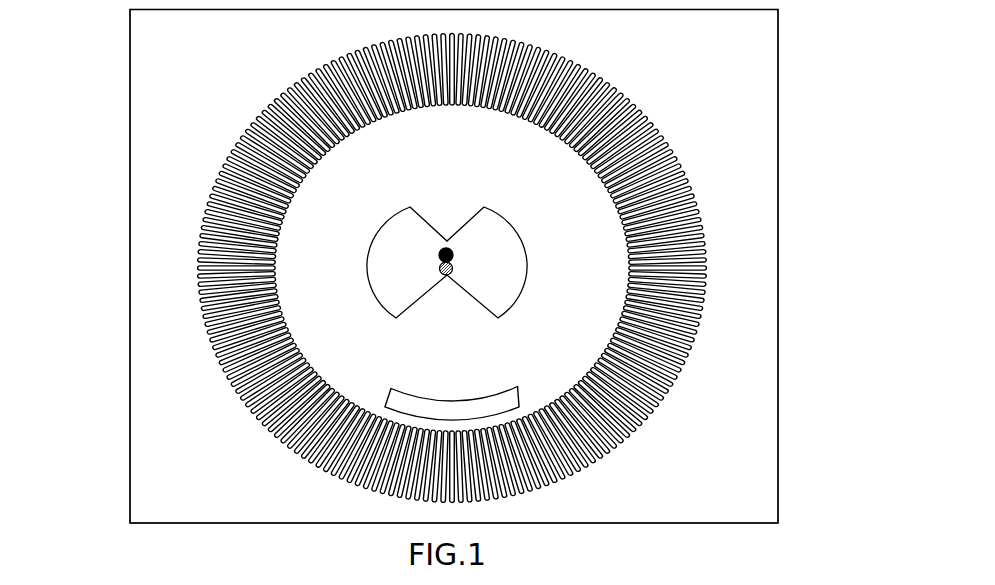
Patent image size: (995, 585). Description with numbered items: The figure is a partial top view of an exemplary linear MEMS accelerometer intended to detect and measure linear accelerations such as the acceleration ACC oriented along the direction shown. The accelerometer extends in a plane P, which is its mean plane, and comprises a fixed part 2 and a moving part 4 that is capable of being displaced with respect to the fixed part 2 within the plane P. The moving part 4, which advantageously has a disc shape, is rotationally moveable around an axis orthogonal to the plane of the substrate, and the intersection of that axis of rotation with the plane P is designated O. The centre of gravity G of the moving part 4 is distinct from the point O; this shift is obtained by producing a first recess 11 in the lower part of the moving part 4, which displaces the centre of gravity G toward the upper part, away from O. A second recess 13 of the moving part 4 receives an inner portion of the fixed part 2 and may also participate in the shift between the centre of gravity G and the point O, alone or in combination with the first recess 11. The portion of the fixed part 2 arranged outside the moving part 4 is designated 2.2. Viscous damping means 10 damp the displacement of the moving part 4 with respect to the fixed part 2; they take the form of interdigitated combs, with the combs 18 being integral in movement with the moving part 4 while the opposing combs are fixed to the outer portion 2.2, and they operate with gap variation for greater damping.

The fixed part 2 is at (803, 36).
The outer portion of the fixed part 2.2 is at (142, 43).
The moving part 4 is at (533, 148).
The viscous damping means 10 is at (686, 437).
The first recess 11 is at (404, 404).
The second recess 13 is at (508, 223).
The combs integral with the moving part 18 is at (704, 332).
The centre of gravity G is at (447, 248).
The intersection point of the axis of rotation with the plane O is at (447, 276).
The plane P is at (761, 510).
The acceleration ACC is at (766, 59).